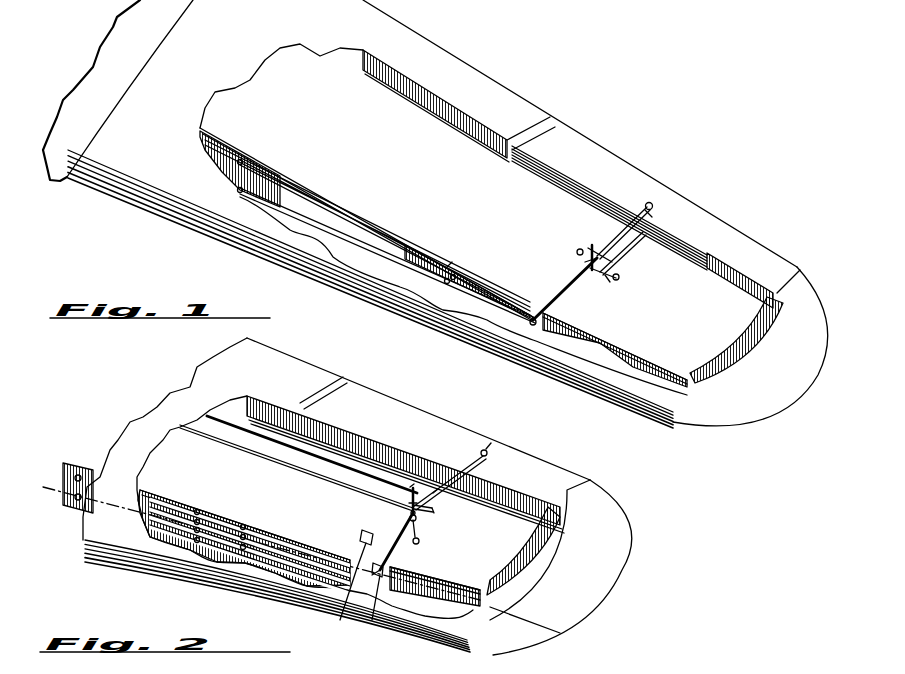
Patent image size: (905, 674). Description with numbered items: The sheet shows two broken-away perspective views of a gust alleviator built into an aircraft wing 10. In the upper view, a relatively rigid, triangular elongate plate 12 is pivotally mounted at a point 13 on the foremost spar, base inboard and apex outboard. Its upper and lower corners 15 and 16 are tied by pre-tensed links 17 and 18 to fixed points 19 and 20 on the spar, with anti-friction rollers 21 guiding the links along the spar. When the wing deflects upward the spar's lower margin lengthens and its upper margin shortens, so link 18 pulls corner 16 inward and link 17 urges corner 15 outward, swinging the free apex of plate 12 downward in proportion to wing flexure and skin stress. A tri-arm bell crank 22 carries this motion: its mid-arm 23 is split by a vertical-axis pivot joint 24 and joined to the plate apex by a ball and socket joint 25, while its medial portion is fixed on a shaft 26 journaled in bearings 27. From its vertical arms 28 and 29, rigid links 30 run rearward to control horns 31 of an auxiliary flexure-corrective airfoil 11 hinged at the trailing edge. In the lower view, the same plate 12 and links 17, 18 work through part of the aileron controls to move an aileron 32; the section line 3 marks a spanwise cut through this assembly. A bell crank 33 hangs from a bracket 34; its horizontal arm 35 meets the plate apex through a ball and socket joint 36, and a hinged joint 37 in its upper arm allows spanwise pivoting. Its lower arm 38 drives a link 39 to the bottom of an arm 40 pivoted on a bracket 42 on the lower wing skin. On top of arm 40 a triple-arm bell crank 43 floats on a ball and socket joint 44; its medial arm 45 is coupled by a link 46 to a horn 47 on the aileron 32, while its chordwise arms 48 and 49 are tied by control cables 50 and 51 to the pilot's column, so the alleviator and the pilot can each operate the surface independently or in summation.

In FIG. 2, the section line 3— 3 is at (50, 490).
In FIG. 1, the wing 10 is at (215, 47).
In FIG. 1, the auxiliary flexure-corrective airfoil 11 is at (705, 213).
In FIG. 1, the elongate plate 12 is at (492, 300).
In FIG. 2, the elongate plate 12 is at (300, 557).
In FIG. 1, the pivot point 13 is at (458, 298).
In FIG. 1, the upper corner 15 is at (448, 268).
In FIG. 1, the lower corner 16 is at (445, 284).
In FIG. 1, the link 17 is at (318, 200).
In FIG. 2, the link 17 is at (220, 515).
In FIG. 1, the link 18 is at (320, 255).
In FIG. 2, the link 18 is at (190, 550).
In FIG. 1, the fixed point 19 is at (242, 162).
In FIG. 1, the fixed point 20 is at (240, 190).
In FIG. 2, the anti-friction rollers 21 is at (248, 537).
In FIG. 1, the tri-arm bell crank 22 is at (589, 244).
In FIG. 1, the mid-arm 23 is at (572, 288).
In FIG. 1, the pivot joint 24 is at (586, 262).
In FIG. 1, the ball and socket joint 25 is at (532, 328).
In FIG. 1, the shaft 26 is at (619, 278).
In FIG. 1, the bearings 27 is at (577, 252).
In FIG. 1, the vertically extending arm 28 is at (620, 240).
In FIG. 1, the vertically extending arm 29 is at (602, 276).
In FIG. 1, the rigid links 30 is at (646, 212).
In FIG. 1, the control horns 31 is at (645, 236).
In FIG. 2, the airfoil 32 is at (560, 474).
In FIG. 2, the bell crank 33 is at (380, 556).
In FIG. 2, the bracket 34 is at (408, 514).
In FIG. 2, the horizontal arm 35 is at (363, 536).
In FIG. 2, the ball and socket joint 36 is at (352, 585).
In FIG. 2, the hinged joint 37 is at (373, 585).
In FIG. 2, the lower arm 38 is at (385, 568).
In FIG. 2, the link 39 is at (412, 570).
In FIG. 2, the arm 40 is at (420, 517).
In FIG. 2, the bracket 42 is at (420, 542).
In FIG. 2, the triple-arm bell crank 43 is at (410, 488).
In FIG. 2, the ball and socket joint 44 is at (410, 487).
In FIG. 2, the medial arm 45 is at (453, 522).
In FIG. 2, the link 46 is at (443, 503).
In FIG. 2, the horn 47 is at (488, 452).
In FIG. 2, the chordwise extending arm 48 is at (405, 503).
In FIG. 2, the chordwise extending arm 49 is at (433, 493).
In FIG. 2, the control cable 50 is at (246, 449).
In FIG. 2, the control cable 51 is at (278, 447).